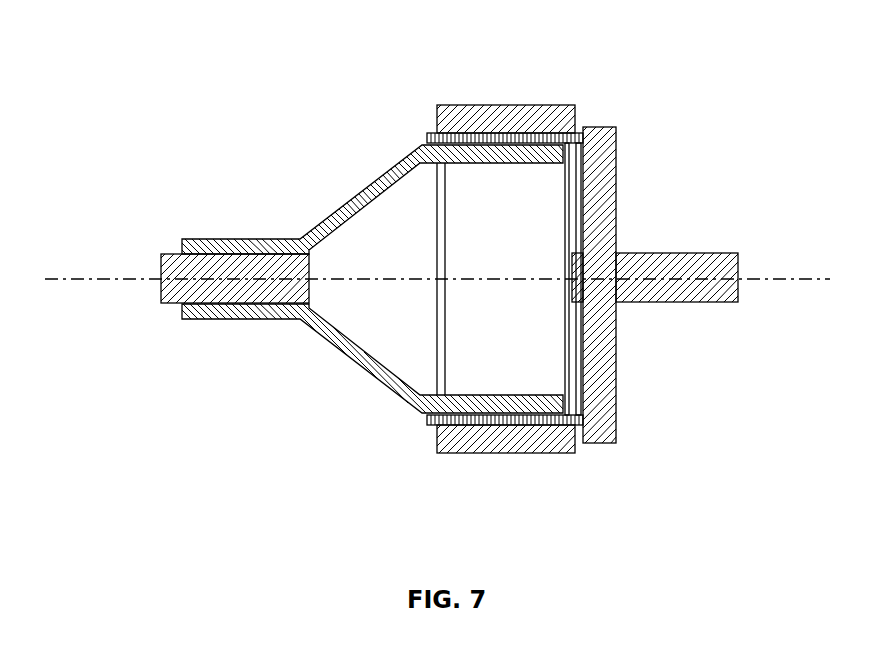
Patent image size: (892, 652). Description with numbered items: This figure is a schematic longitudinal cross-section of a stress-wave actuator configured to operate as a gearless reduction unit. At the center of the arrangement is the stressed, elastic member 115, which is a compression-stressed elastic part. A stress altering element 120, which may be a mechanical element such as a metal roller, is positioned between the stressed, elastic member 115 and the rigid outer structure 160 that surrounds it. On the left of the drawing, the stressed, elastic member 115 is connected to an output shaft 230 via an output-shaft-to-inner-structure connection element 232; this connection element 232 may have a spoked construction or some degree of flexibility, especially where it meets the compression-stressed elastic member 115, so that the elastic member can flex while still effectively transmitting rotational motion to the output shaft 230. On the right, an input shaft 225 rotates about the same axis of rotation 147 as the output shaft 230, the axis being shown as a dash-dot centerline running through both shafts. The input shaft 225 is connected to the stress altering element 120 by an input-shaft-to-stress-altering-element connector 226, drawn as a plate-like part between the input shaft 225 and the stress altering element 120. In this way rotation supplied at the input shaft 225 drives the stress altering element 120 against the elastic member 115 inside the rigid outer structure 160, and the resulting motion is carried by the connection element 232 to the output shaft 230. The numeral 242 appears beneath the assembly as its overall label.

The stressed, elastic member 115 is at (563, 152).
The stress altering element 120 is at (423, 138).
The axis of rotation 147 is at (763, 278).
The rigid outer structure 160 is at (577, 118).
The input shaft 225 is at (647, 302).
The input-shaft-to-stress-altering-element connector 226 is at (618, 395).
The output shaft 230 is at (160, 267).
The output-shaft-to-inner-structure connection element 232 is at (337, 350).
The coupling assembly 242 is at (555, 553).